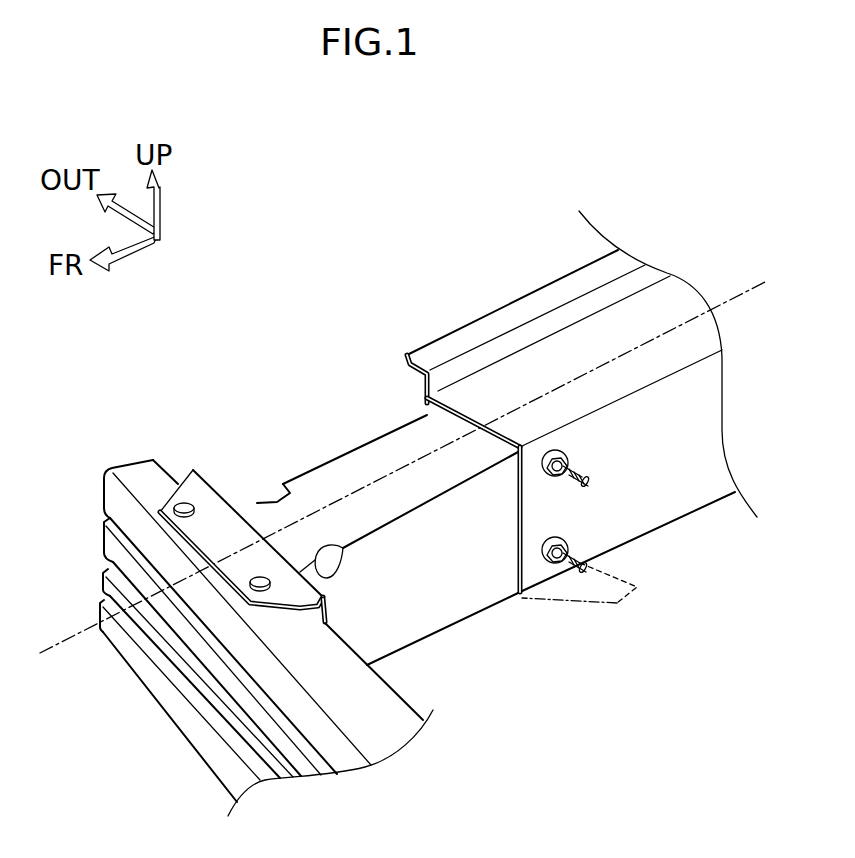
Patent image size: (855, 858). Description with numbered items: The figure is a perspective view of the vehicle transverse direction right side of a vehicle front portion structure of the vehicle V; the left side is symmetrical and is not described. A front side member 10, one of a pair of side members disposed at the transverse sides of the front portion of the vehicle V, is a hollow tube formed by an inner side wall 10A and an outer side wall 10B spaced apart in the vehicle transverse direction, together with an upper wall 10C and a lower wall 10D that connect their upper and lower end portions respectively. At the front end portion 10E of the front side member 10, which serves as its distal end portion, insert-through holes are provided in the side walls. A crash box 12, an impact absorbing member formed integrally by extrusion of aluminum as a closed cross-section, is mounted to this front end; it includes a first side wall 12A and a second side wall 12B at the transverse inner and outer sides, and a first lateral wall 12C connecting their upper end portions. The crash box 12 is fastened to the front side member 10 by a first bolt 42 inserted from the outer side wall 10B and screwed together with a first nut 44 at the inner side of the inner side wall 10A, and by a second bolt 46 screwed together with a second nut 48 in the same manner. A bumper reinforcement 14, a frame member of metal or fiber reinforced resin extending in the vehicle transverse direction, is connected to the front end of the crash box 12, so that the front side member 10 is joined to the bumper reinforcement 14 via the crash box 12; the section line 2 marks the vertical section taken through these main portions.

The front side member 10 is at (482, 265).
The inner side wall 10A is at (673, 490).
The outer side wall 10B is at (427, 407).
The upper wall 10C is at (673, 300).
The lower wall 10D is at (513, 593).
The front end portion 10E is at (612, 603).
The crash box 12 is at (285, 420).
The first side wall 12A is at (443, 602).
The second side wall 12B is at (313, 470).
The first lateral wall 12C is at (265, 513).
The bumper reinforcement 14 is at (175, 725).
The first bolt 42 is at (586, 477).
The first nut 44 is at (570, 453).
The second bolt 46 is at (581, 557).
The second nut 48 is at (577, 540).
The section line 2- 2 is at (798, 313).
The vehicle V is at (561, 190).